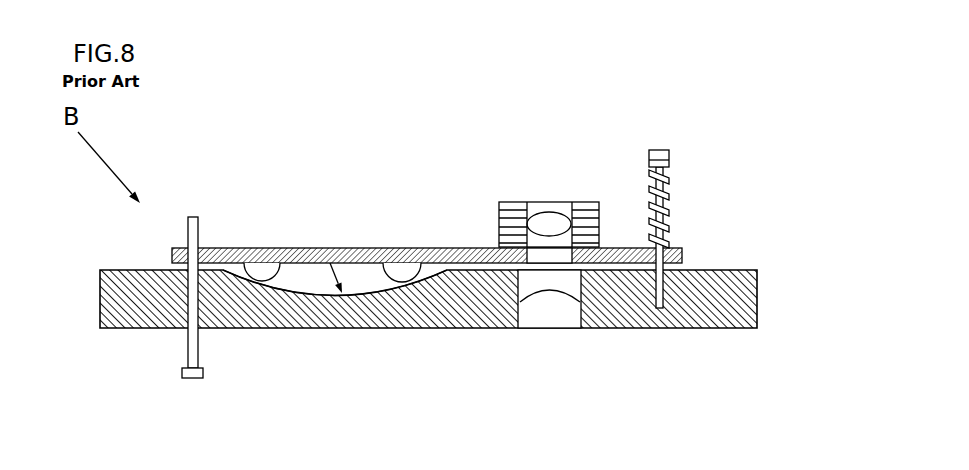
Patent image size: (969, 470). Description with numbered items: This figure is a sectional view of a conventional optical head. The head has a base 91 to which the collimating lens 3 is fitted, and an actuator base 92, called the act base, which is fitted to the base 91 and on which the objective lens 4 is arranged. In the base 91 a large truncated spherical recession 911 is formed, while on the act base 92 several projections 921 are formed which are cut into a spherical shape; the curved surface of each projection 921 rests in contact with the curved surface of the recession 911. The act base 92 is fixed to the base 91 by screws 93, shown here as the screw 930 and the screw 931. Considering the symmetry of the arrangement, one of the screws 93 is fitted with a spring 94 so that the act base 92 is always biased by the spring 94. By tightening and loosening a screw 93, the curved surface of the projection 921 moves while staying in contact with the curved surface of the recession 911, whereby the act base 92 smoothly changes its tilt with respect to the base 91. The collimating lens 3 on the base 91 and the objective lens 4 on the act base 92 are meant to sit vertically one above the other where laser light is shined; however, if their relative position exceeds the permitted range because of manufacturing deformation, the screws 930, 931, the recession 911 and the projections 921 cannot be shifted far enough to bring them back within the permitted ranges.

The base 91 is at (107, 285).
The recession 911 is at (315, 265).
The actuator base 92 is at (215, 247).
The projections 921 is at (400, 270).
The collimating lens 3 is at (553, 305).
The objective lens 4 is at (552, 220).
The screws 93 is at (456, 277).
The screw 930 is at (735, 214).
The screw 931 is at (182, 373).
The spring 94 is at (665, 200).